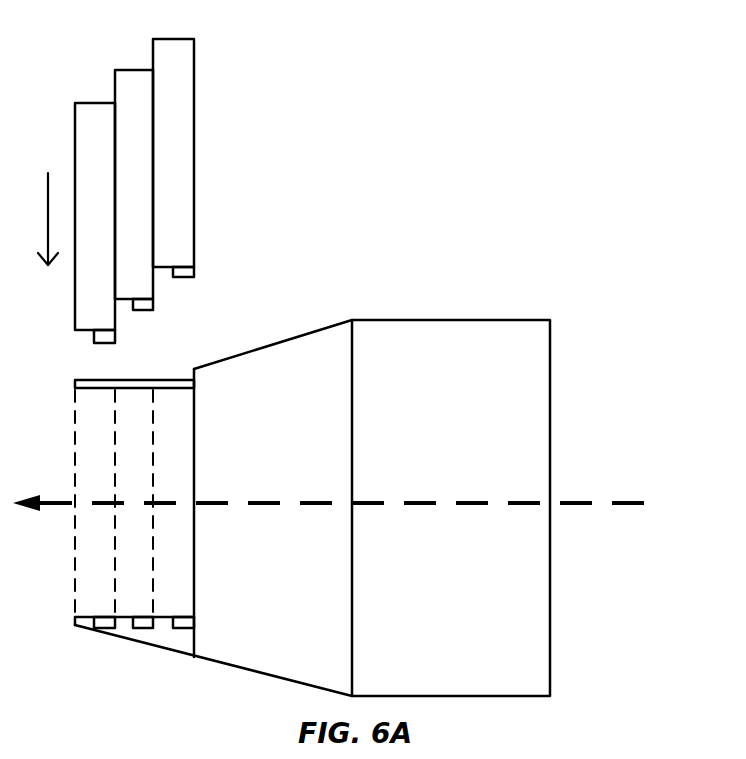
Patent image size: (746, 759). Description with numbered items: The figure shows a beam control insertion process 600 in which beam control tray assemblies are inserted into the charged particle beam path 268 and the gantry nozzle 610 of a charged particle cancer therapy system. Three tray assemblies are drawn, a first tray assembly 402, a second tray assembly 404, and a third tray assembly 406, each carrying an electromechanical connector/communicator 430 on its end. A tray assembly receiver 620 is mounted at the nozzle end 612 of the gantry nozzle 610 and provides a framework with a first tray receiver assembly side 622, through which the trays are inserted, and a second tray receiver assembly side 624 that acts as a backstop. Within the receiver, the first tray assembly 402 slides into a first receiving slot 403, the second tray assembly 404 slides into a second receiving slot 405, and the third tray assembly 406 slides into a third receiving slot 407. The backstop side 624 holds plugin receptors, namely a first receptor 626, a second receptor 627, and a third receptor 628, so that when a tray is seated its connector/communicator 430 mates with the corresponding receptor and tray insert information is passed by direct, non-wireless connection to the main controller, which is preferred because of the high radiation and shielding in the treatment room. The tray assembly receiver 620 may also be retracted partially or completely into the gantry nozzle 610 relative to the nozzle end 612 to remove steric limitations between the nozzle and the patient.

The beam control insertion process 600 is at (548, 60).
The first tray assembly 402 is at (97, 103).
The second tray assembly 404 is at (136, 70).
The third tray assembly 406 is at (173, 39).
The electromechanical connector/communicator 430 is at (195, 270).
The tray assembly receiver 620 is at (294, 501).
The first tray receiver assembly side 622 is at (100, 377).
The gantry nozzle 610 is at (513, 318).
The nozzle end 612 is at (194, 525).
The second tray receiver assembly side 624 is at (194, 647).
The first receptor 626 is at (105, 632).
The second receptor 627 is at (143, 632).
The third receptor 628 is at (182, 632).
The first receiving slot 403 is at (65, 590).
The second receiving slot 405 is at (105, 532).
The third receiving slot 407 is at (145, 415).
The charged particle beam path 268 is at (590, 498).